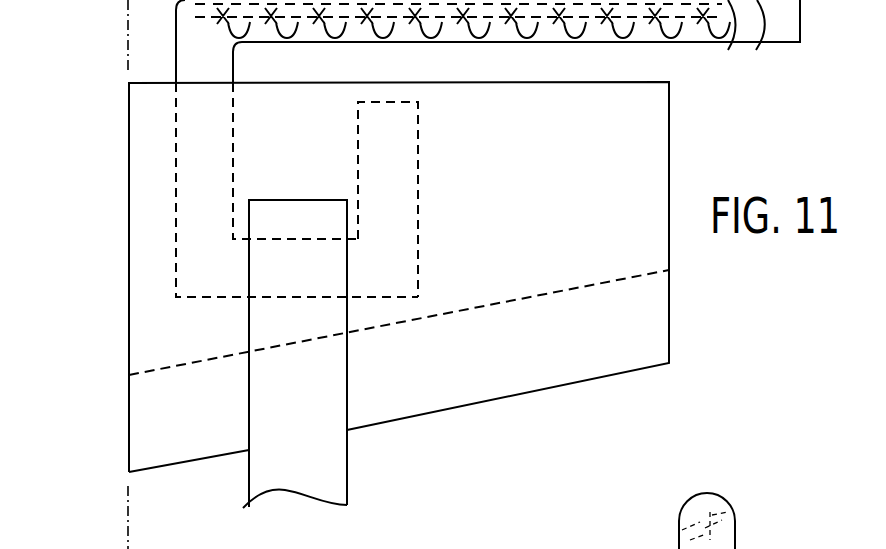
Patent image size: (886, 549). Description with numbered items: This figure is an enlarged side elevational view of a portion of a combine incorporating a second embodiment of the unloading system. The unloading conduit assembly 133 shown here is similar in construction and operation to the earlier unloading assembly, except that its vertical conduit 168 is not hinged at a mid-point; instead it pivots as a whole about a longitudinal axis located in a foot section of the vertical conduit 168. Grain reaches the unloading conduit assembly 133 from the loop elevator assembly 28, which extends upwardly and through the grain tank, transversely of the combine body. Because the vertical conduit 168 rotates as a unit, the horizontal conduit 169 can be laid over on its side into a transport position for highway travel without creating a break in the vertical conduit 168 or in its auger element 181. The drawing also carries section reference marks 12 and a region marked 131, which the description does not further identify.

The section line / cartridge reference 12 is at (118, 18).
The vertical conduit 168 is at (176, 157).
The unloading conduit assembly 133 is at (210, 178).
The right electrical contact region 131 is at (402, 192).
The loop elevator assembly 28 is at (324, 453).
The horizontal conduit 169 is at (732, 497).
The auger element 181 is at (622, 545).